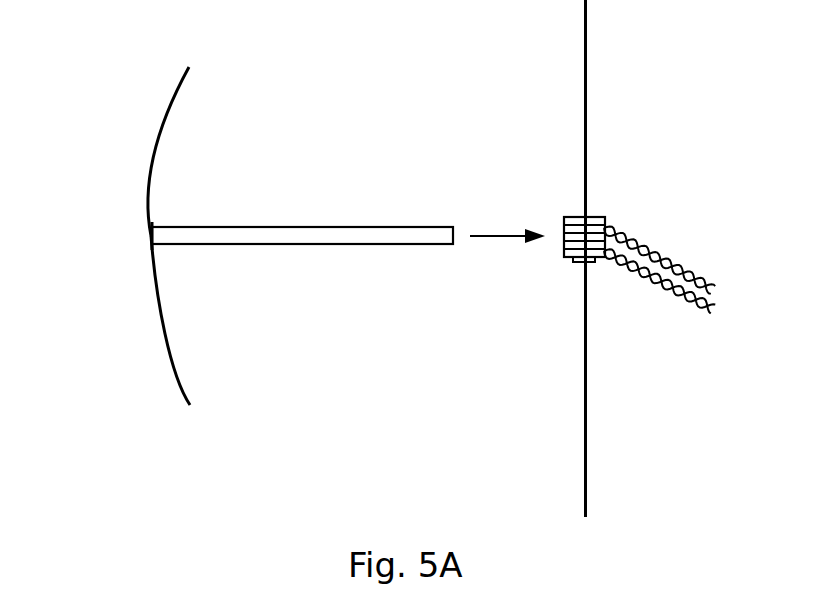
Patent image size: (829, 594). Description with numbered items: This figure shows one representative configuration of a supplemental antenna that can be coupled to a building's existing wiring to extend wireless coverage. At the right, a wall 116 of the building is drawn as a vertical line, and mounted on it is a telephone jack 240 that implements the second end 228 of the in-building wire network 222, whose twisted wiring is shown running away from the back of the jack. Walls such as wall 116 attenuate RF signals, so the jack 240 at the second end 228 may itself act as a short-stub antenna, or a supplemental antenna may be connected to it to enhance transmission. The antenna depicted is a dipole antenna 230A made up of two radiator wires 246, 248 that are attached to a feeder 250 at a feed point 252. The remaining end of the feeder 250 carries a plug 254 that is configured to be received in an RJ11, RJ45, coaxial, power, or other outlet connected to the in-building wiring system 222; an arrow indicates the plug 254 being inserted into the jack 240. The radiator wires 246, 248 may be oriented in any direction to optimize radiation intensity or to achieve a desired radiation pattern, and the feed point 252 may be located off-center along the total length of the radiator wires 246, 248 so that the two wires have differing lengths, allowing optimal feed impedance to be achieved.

The dipole antenna 230A is at (103, 66).
The radiator wire 248 is at (157, 142).
The radiator wire 246 is at (158, 330).
The feed point 252 is at (151, 236).
The feeder 250 is at (302, 226).
The plug 254 is at (455, 235).
The wall 116 is at (586, 103).
The second end 228 is at (655, 150).
The telephone jack 240 is at (598, 217).
The in-building wire network 222 is at (700, 282).